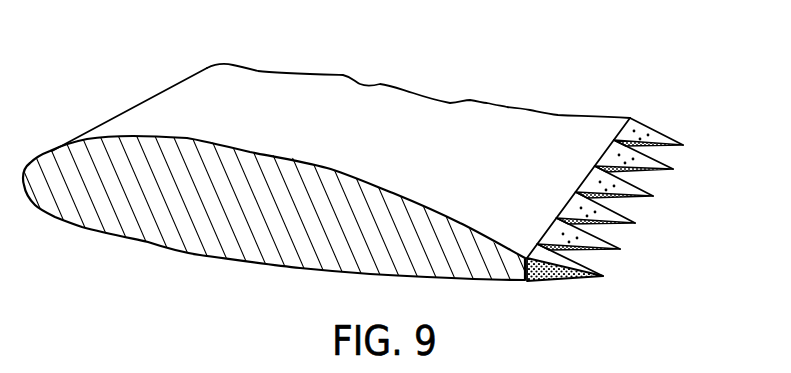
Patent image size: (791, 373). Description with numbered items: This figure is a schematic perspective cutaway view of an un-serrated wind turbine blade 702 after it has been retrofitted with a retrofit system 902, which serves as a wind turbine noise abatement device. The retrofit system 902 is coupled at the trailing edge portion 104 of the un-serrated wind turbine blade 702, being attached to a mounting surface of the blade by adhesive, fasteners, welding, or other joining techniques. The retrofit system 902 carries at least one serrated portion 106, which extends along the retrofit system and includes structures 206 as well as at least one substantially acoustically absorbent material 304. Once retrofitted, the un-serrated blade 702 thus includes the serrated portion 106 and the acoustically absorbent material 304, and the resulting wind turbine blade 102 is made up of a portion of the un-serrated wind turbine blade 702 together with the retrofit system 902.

The wind turbine blade 102 is at (505, 55).
The un-serrated wind turbine blade 702 is at (418, 124).
The trailing edge portion 104 is at (603, 128).
The retrofit system 902 is at (645, 216).
The structures 206 is at (662, 160).
The serrated portion 106 is at (661, 215).
The substantially acoustically absorbent material 304 is at (547, 280).